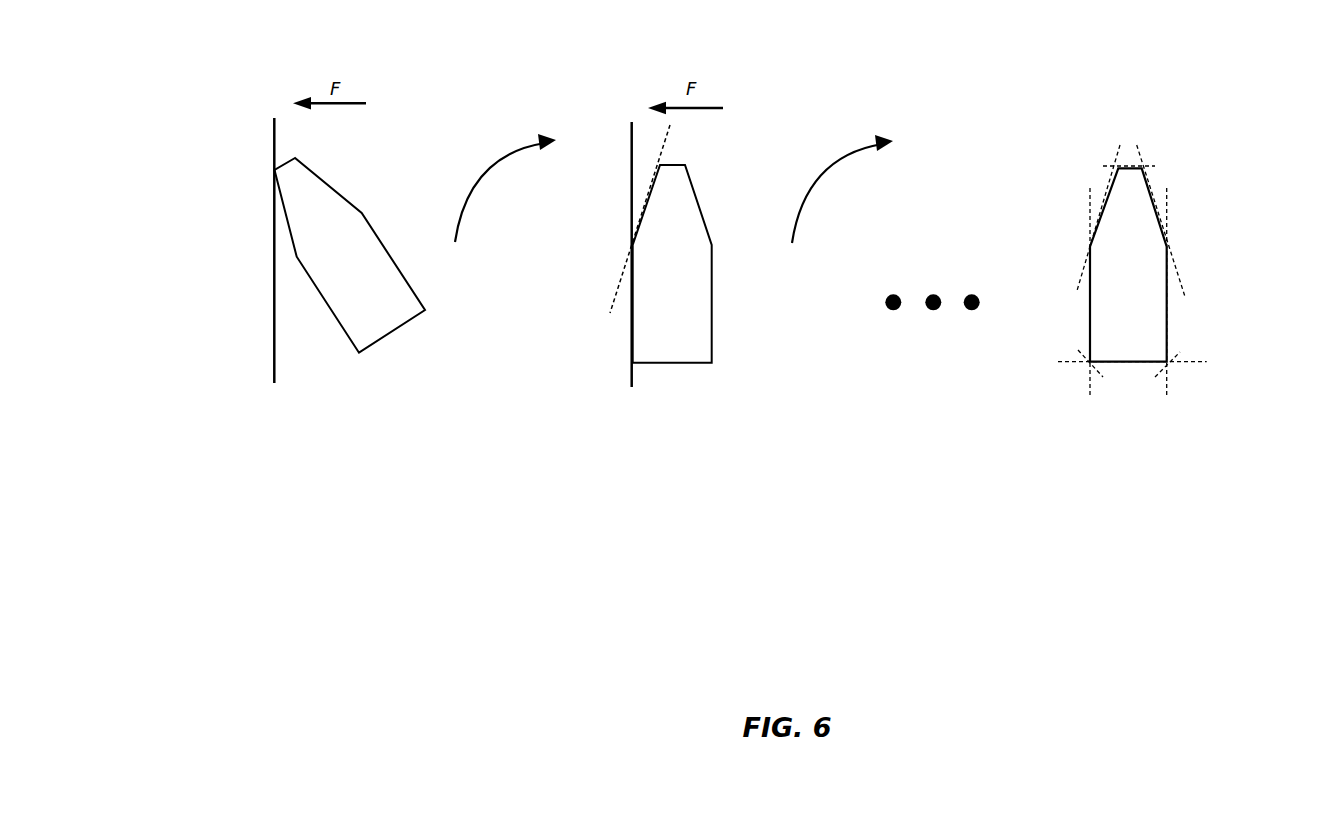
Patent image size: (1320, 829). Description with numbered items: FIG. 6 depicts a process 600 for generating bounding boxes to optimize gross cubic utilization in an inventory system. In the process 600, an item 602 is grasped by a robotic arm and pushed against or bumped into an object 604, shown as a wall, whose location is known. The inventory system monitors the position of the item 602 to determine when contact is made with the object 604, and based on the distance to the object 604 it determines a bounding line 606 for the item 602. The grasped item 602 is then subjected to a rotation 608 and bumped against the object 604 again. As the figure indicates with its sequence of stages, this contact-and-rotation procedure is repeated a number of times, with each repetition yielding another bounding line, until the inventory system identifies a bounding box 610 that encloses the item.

The process 600 is at (1123, 45).
The item 602 is at (373, 343).
The object 604 is at (274, 170).
The bounding line 606 is at (610, 313).
The rotation 608 is at (674, 188).
The bounding box 610 is at (1182, 213).